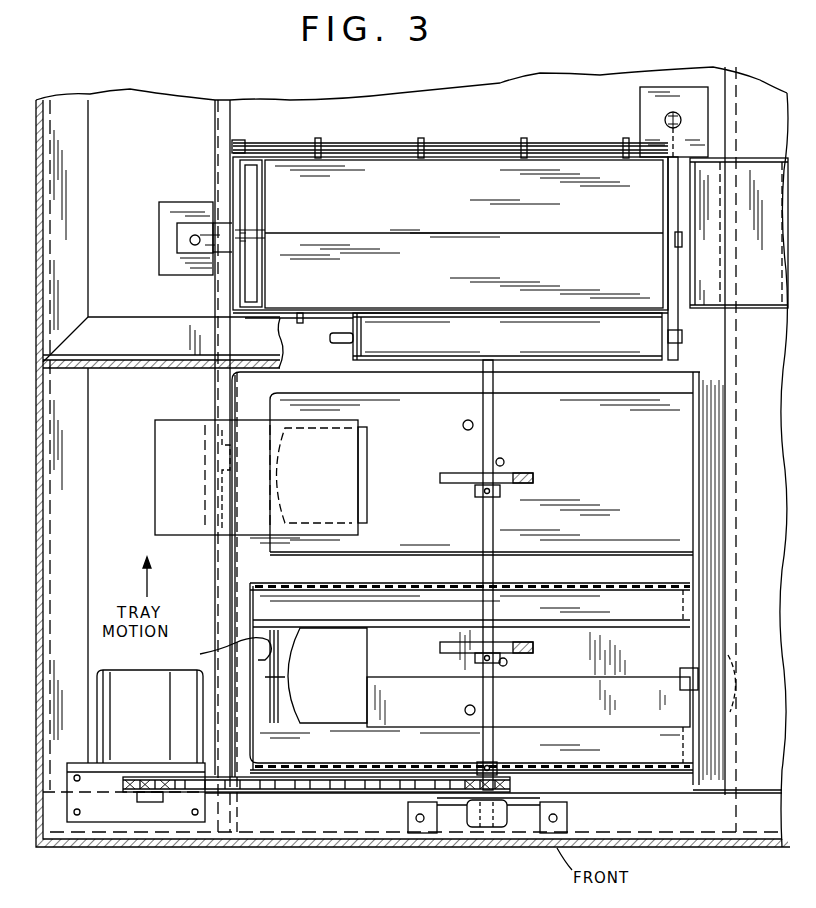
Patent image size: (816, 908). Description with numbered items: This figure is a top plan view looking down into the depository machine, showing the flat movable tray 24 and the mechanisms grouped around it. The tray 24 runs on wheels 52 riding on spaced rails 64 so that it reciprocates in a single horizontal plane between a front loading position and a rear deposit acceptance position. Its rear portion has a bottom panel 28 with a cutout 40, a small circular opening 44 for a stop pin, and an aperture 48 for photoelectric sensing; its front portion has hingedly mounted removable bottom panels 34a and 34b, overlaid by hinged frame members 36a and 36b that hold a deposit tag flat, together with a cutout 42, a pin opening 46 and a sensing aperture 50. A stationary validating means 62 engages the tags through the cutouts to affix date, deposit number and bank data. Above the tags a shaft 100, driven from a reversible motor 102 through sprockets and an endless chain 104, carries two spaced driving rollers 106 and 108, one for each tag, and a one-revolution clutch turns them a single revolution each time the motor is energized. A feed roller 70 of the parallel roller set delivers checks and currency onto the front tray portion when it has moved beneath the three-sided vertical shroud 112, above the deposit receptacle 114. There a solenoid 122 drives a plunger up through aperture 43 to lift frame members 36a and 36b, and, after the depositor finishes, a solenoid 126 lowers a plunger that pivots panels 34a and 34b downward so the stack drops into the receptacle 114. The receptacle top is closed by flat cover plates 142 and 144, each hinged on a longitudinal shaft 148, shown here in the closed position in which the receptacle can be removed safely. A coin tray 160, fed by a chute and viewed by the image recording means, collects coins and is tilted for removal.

The movable tray 24 is at (712, 651).
The bottom panel 28 is at (592, 481).
The hinged bottom panel 34a is at (577, 715).
The hinged bottom panel 34b is at (626, 657).
The hinged frame member 36a is at (547, 759).
The hinged frame member 36b is at (573, 623).
The cutout 40 is at (286, 483).
The cutout 42 is at (288, 693).
The aperture 43 is at (222, 652).
The circular opening 44 is at (463, 426).
The circular opening 46 is at (465, 711).
The aperture 48 is at (504, 460).
The aperture 50 is at (507, 662).
The wheels 52 is at (733, 712).
The validating means 62 is at (188, 473).
The rails 64 is at (725, 353).
The roller 70 is at (474, 346).
The shaft 100 is at (484, 521).
The reversible motor 102 is at (158, 738).
The endless chain 104 is at (288, 793).
The driving roller 106 is at (443, 480).
The driving roller 108 is at (440, 647).
The vertical shroud 112 is at (252, 162).
The deposit receptacle 114 is at (481, 128).
The solenoid 122 is at (196, 215).
The solenoid 126 is at (664, 119).
The cover plate 142 is at (455, 205).
The cover plate 144 is at (537, 270).
The longitudinal shaft 148 is at (390, 147).
The coin tray 160 is at (772, 279).